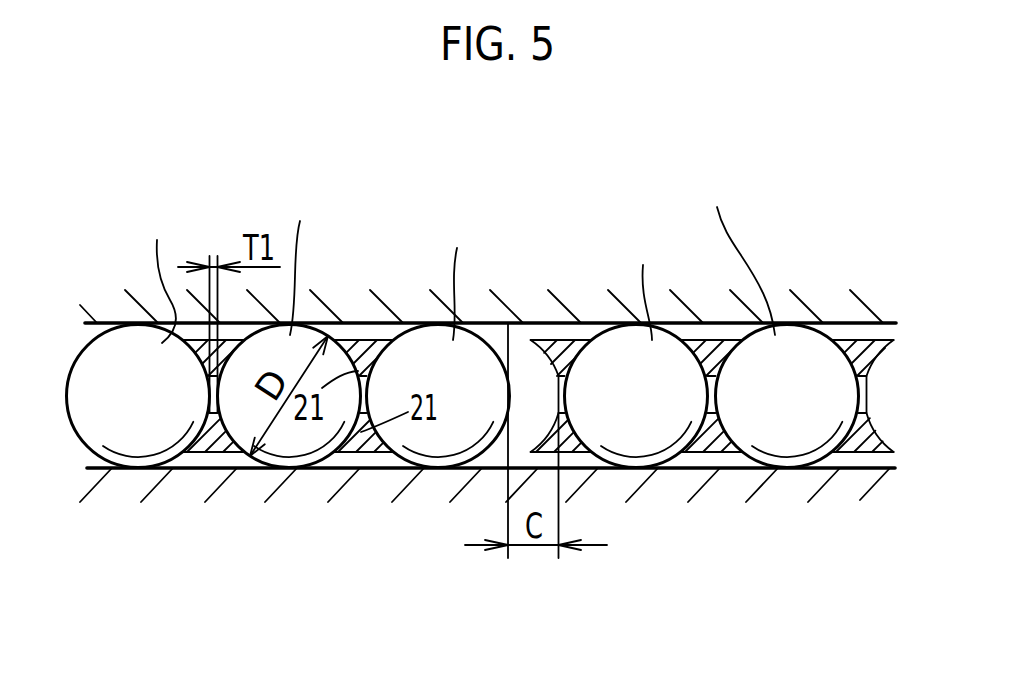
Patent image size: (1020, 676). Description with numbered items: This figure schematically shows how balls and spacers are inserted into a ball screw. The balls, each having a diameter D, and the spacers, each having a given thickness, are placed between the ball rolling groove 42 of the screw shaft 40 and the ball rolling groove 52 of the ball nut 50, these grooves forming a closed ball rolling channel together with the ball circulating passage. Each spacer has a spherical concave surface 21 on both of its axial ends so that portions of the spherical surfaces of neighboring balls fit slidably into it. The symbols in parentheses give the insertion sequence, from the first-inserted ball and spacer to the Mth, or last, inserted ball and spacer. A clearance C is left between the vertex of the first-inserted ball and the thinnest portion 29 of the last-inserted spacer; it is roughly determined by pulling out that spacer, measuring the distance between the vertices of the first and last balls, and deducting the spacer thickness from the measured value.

The spherical concave surface 21 is at (358, 371).
The thinnest portion of spacer 29 is at (553, 393).
The ball nut 50 is at (488, 252).
The ball rolling groove 52 is at (829, 320).
The screw shaft 40 is at (487, 532).
The ball rolling groove 42 is at (841, 465).